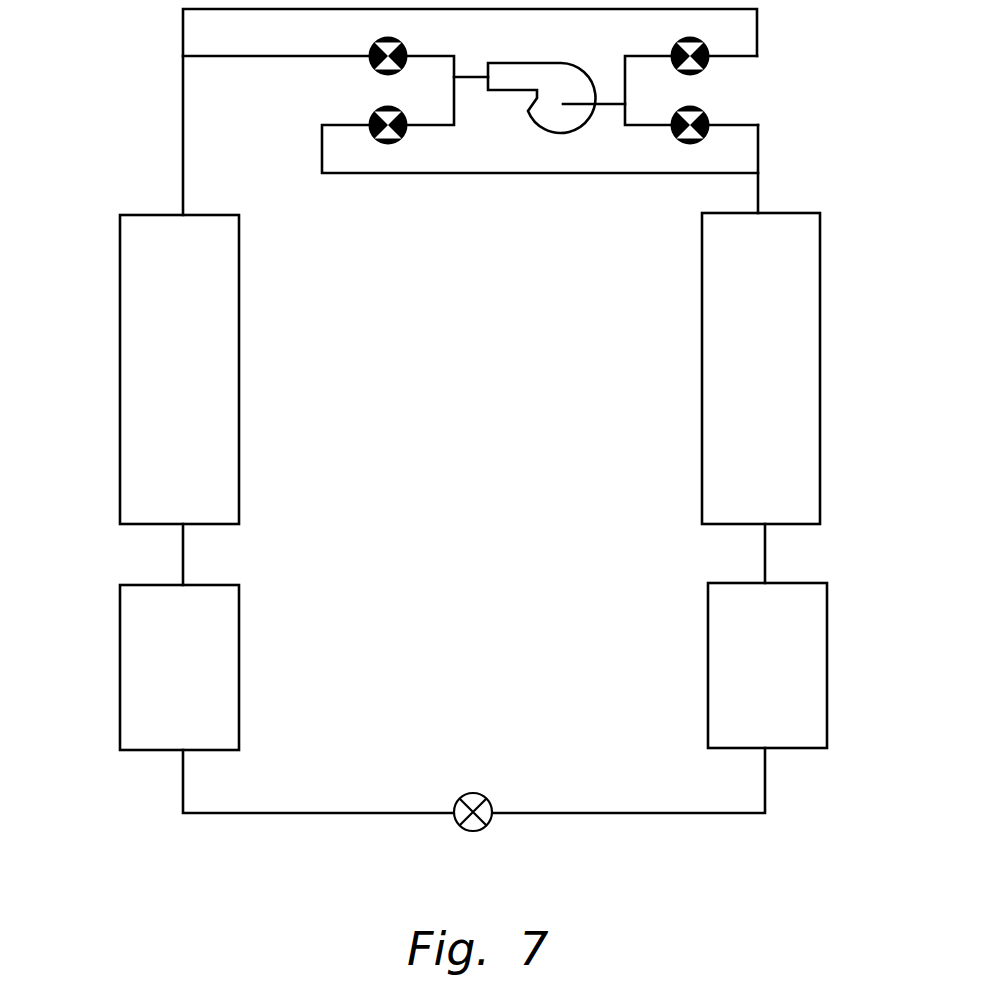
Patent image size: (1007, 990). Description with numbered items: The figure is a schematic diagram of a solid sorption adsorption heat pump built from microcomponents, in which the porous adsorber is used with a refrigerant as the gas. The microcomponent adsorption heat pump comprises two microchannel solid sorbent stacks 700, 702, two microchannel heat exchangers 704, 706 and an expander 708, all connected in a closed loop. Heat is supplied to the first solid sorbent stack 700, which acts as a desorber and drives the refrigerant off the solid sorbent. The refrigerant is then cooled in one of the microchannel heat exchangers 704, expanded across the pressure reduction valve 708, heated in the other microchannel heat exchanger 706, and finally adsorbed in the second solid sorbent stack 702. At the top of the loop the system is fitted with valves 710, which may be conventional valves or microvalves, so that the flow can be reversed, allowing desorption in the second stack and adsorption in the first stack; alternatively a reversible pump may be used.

The microchannel solid sorbent stack 700 is at (179, 369).
The microchannel solid sorbent stack 702 is at (761, 368).
The microchannel heat exchanger 704 is at (120, 688).
The microchannel heat exchanger 706 is at (827, 687).
The expander 708 is at (488, 824).
The valves 710 is at (707, 63).